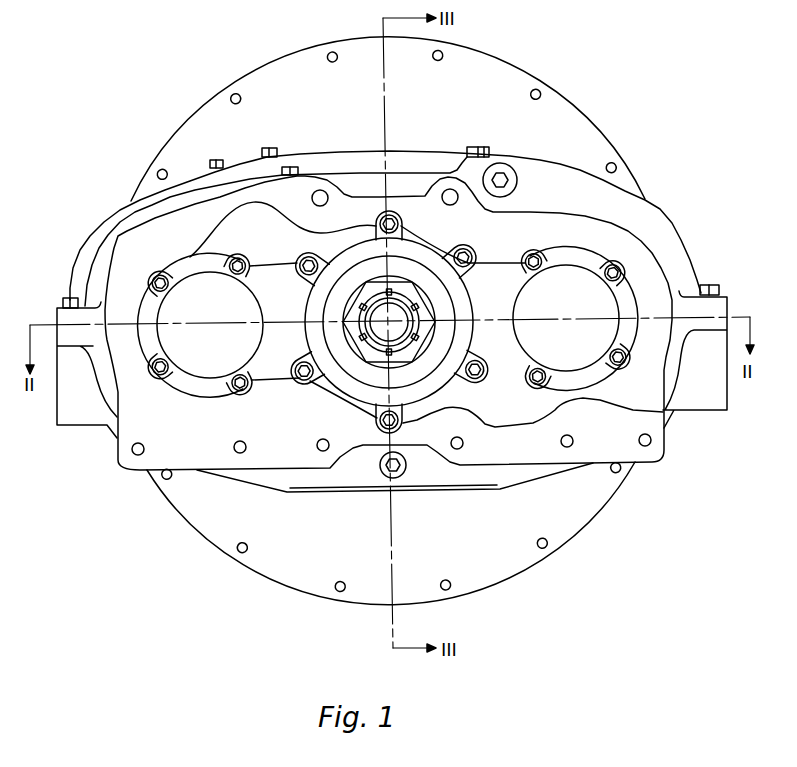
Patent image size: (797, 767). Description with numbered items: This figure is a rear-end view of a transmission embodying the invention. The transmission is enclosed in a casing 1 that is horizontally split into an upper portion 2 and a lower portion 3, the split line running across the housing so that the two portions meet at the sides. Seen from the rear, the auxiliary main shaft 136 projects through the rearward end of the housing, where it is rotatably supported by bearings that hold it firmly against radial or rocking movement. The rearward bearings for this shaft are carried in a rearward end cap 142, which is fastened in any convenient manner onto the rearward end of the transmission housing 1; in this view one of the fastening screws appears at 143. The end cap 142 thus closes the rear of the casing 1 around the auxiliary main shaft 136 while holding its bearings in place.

The casing 1 is at (671, 201).
The upper portion 2 is at (698, 259).
The lower portion 3 is at (677, 389).
The auxiliary main shaft 136 is at (400, 314).
The rearward end cap 142 is at (433, 238).
The screw 143 is at (476, 377).